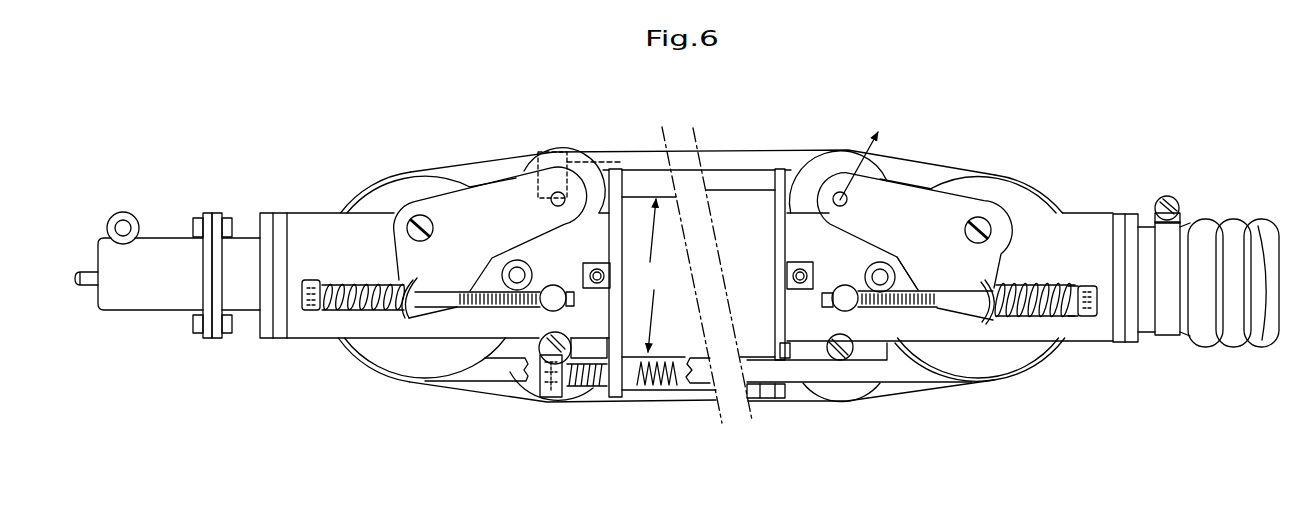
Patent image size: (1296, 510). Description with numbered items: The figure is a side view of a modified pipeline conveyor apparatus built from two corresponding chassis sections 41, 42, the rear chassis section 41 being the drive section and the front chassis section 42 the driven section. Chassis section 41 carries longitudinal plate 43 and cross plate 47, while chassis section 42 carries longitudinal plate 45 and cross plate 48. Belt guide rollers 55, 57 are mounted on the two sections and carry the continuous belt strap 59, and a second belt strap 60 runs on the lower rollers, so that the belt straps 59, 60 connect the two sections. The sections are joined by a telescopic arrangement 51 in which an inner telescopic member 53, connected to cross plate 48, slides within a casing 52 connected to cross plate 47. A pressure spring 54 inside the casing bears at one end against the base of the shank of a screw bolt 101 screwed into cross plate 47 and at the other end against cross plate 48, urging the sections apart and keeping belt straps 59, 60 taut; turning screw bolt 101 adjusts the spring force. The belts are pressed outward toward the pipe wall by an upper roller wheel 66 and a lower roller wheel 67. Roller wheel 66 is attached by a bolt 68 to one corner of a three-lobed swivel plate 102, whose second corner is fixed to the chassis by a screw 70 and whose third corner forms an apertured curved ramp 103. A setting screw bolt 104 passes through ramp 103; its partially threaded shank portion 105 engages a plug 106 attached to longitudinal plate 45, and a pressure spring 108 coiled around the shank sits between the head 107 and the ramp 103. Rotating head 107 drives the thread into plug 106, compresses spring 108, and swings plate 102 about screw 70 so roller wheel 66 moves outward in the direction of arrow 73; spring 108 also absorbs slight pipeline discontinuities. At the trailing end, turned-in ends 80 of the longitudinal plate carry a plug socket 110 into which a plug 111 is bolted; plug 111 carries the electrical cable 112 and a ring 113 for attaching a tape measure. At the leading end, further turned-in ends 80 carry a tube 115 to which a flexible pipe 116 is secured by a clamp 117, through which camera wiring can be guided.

The chassis section 41 is at (262, 347).
The chassis section 42 is at (1097, 350).
The longitudinal plate 43 is at (312, 328).
The longitudinal plate 45 is at (1067, 232).
The cross plate 47 is at (615, 397).
The cross plate 48 is at (788, 402).
The telescopic arrangement 51 is at (662, 275).
The casing 52 is at (647, 185).
The inner telescopic member 53 is at (737, 182).
The pressure spring 54 is at (650, 387).
The belt guide roller 55 is at (355, 347).
The belt guide roller 57 is at (1020, 360).
The belt strap 59 is at (632, 155).
The belt strap 60 is at (478, 387).
The roller wheel 66 is at (537, 168).
The roller wheel 67 is at (532, 380).
The bolt 68 is at (845, 198).
The screw 70 is at (982, 223).
The arrow 73 is at (859, 152).
The turned-in ends 80 is at (282, 222).
The screw bolt 101 is at (560, 162).
The three-lobed swivel plate 102 is at (922, 212).
The curved ramp 103 is at (993, 288).
The screw bolt 104 is at (1017, 322).
The shank portion 105 is at (923, 303).
The plug 106 is at (845, 290).
The head 107 is at (1080, 312).
The pressure spring 108 is at (1067, 293).
The plug socket 110 is at (247, 257).
The plug 111 is at (160, 295).
The electrical cable 112 is at (92, 283).
The ring 113 is at (135, 215).
The tube 115 is at (1130, 332).
The flexible pipe 116 is at (1227, 232).
The clamp 117 is at (1170, 322).